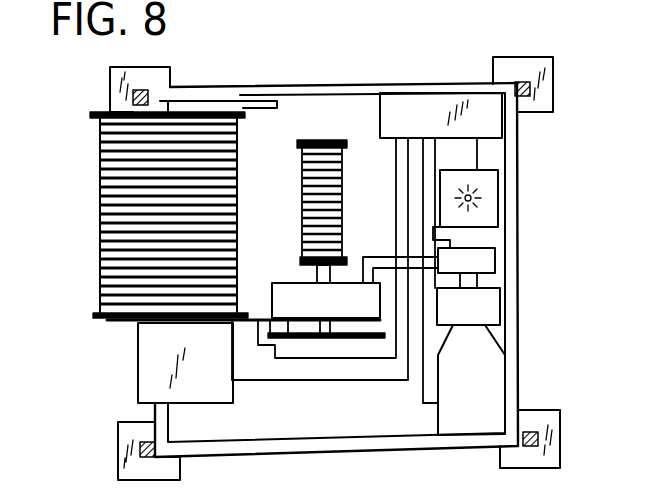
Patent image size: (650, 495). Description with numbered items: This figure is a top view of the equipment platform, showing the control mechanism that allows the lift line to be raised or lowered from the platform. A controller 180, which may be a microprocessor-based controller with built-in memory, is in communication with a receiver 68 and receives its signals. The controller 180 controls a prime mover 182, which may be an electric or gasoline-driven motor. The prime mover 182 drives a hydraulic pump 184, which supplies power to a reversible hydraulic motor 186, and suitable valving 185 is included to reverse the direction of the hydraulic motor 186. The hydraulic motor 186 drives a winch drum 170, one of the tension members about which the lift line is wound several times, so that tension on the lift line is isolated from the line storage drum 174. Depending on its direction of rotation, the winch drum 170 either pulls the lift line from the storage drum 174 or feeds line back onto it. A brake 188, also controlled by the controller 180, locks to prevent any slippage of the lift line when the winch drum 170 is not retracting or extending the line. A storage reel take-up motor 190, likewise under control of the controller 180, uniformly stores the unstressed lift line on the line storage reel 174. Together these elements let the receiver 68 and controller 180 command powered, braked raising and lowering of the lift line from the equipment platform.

The receiver 68 is at (500, 187).
The winch drum 170 is at (323, 140).
The line storage drum 174 is at (100, 185).
The controller 180 is at (430, 100).
The prime mover 182 is at (493, 373).
The hydraulic pump 184 is at (488, 307).
The valving 185 is at (498, 258).
The reversible hydraulic motor 186 is at (353, 302).
The brake 188 is at (300, 338).
The storage reel take-up motor 190 is at (152, 362).